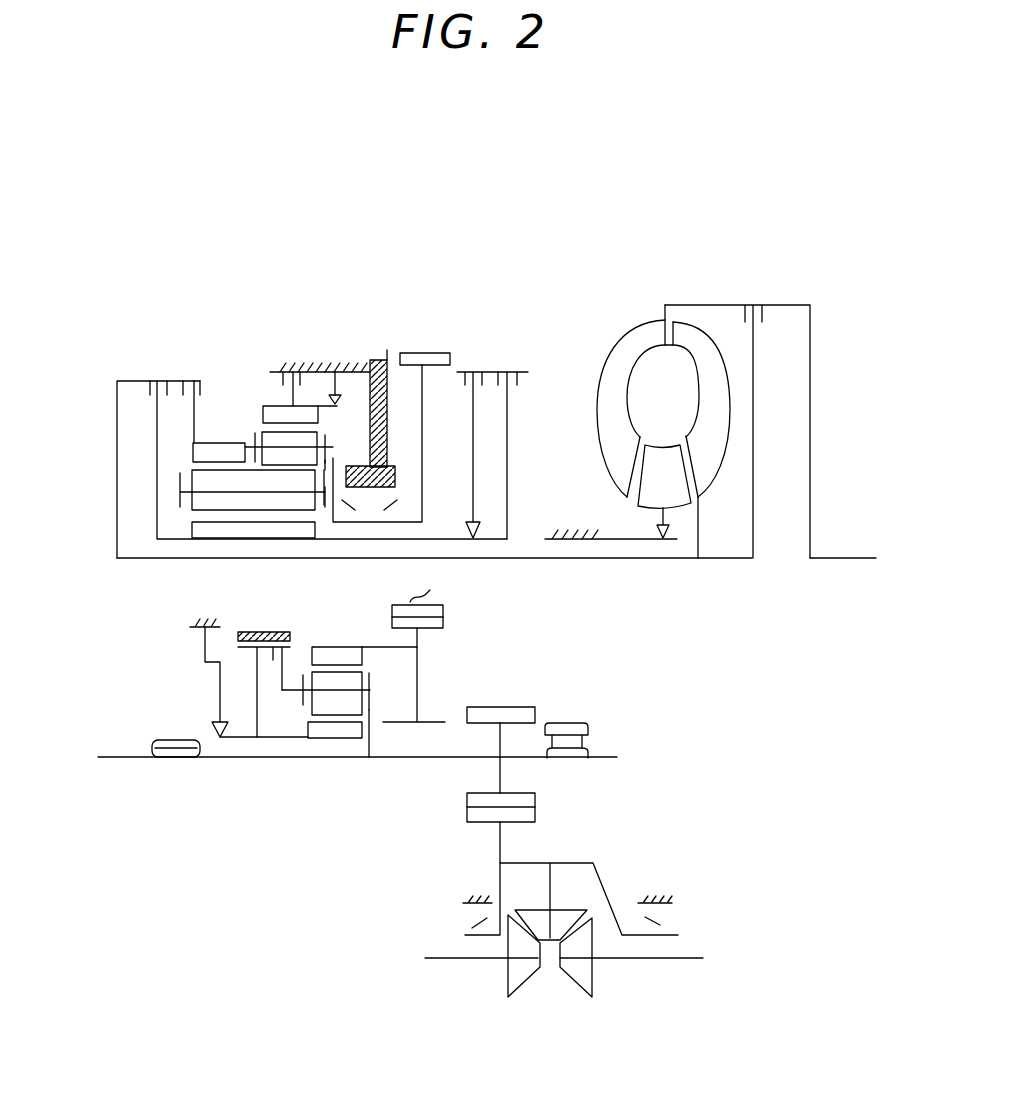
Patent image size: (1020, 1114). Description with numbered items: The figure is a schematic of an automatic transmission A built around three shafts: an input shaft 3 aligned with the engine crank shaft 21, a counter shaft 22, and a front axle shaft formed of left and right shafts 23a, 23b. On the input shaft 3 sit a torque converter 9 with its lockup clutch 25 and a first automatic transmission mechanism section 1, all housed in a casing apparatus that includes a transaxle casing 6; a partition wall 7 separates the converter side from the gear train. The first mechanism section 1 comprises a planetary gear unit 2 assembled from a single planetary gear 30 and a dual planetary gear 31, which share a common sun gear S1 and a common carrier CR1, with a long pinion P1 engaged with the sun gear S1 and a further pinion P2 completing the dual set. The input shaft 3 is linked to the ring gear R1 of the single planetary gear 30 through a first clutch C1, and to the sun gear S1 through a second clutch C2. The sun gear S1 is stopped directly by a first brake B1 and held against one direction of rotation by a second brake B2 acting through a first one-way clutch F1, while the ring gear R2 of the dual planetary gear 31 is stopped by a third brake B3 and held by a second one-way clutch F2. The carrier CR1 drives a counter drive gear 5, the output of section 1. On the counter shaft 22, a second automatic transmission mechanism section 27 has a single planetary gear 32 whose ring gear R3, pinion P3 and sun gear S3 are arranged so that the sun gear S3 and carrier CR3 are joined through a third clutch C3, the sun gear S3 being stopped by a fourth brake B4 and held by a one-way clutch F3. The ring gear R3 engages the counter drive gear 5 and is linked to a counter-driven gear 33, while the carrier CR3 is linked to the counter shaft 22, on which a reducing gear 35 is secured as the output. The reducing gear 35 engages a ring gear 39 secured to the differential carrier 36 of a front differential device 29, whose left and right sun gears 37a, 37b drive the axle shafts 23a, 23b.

The first automatic transmission mechanism section 1 is at (128, 367).
The automatic transmission A is at (190, 297).
The planetary gear unit 2 is at (222, 308).
The input shaft 3 is at (173, 560).
The counter drive gear 5 is at (427, 353).
The transaxle casing 6 is at (318, 362).
The partition wall 7 is at (388, 467).
The torque converter 9 is at (645, 312).
The engine crank shaft 21 is at (845, 557).
The counter shaft 22 is at (235, 760).
The left front axle shaft 23a is at (463, 960).
The right front axle shaft 23b is at (678, 960).
The lockup clutch 25 is at (750, 303).
The second automatic transmission mechanism section 27 is at (200, 675).
The front differential device 29 is at (557, 985).
The single planetary gear 30 is at (210, 433).
The dual planetary gear 31 is at (268, 397).
The single planetary gear 32 is at (340, 641).
The counter-driven gear 33 is at (443, 623).
The reducing gear 35 is at (510, 707).
The differential carrier 36 is at (575, 863).
The left sun gear 37a is at (520, 996).
The right sun gear 37b is at (580, 998).
The ring gear 39 is at (470, 864).
The first clutch C1 is at (201, 396).
The second clutch C2 is at (163, 370).
The third clutch C3 is at (271, 660).
The first brake B1 is at (516, 443).
The second brake B2 is at (492, 433).
The third brake B3 is at (295, 372).
The fourth brake B4 is at (265, 669).
The first one-way clutch F1 is at (456, 513).
The second one-way clutch F2 is at (335, 369).
The one-way clutch F3 is at (243, 723).
The ring gear R1 is at (197, 455).
The ring gear R2 is at (290, 415).
The ring gear R3 is at (360, 657).
The long pinion P1 is at (203, 500).
The second pinion P2 is at (305, 458).
The third pinion P3 is at (326, 693).
The sun gear S1 is at (253, 530).
The sun gear S3 is at (327, 738).
The carrier CR1 is at (320, 503).
The carrier CR3 is at (378, 703).